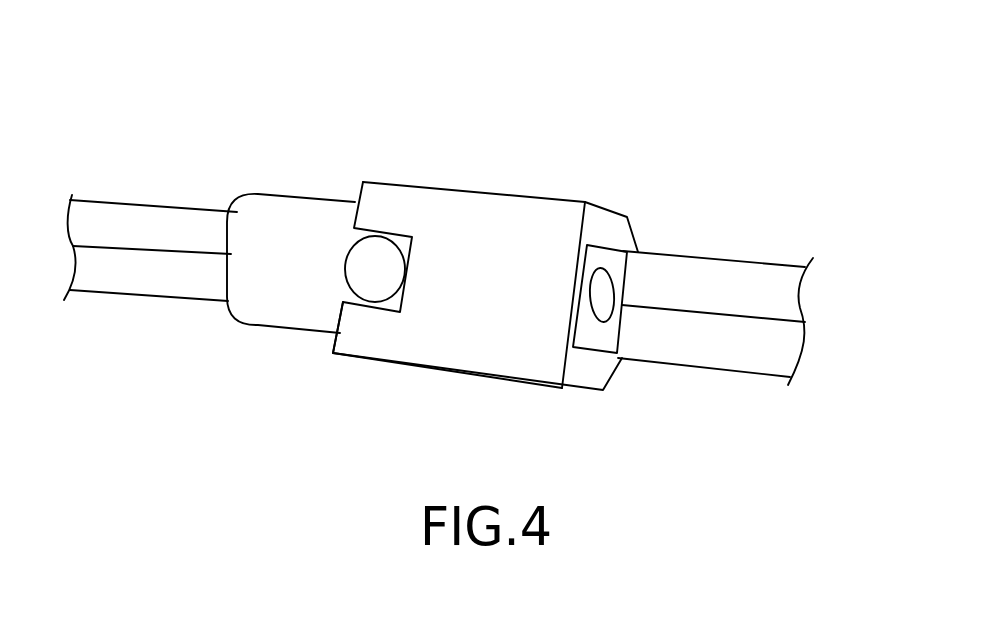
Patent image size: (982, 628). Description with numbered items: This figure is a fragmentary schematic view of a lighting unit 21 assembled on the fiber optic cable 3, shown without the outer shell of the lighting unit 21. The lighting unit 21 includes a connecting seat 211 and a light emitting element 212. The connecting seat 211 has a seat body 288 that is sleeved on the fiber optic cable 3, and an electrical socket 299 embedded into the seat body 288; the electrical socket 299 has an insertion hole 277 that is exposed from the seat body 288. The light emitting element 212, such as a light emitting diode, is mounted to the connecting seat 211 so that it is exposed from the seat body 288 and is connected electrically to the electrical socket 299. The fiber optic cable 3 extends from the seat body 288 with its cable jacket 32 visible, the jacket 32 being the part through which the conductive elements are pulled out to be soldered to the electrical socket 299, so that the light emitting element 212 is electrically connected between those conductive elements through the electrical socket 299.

The lighting unit 21 is at (365, 140).
The connecting seat 211 is at (508, 188).
The light emitting element 212 is at (385, 255).
The insertion hole 277 is at (603, 275).
The seat body 288 is at (443, 342).
The electrical socket 299 is at (597, 332).
The fiber optic cable 3 is at (768, 210).
The cable jacket 32 is at (745, 350).